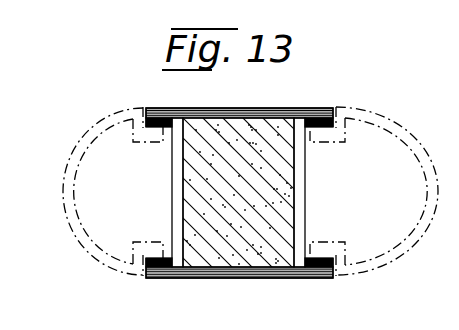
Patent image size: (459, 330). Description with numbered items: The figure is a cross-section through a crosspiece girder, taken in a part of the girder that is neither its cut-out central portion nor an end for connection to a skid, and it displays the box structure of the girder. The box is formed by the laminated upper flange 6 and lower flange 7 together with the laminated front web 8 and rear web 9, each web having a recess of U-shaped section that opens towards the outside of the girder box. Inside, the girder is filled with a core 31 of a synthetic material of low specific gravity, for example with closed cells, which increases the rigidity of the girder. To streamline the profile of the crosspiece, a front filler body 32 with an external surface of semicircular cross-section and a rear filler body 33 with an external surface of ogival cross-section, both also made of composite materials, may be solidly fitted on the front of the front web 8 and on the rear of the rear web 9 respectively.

The upper flange 6 is at (247, 108).
The lower flange 7 is at (248, 279).
The front web 8 is at (172, 167).
The rear web 9 is at (303, 184).
The core 31 is at (222, 210).
The front filler body 32 is at (83, 140).
The rear filler body 33 is at (417, 146).